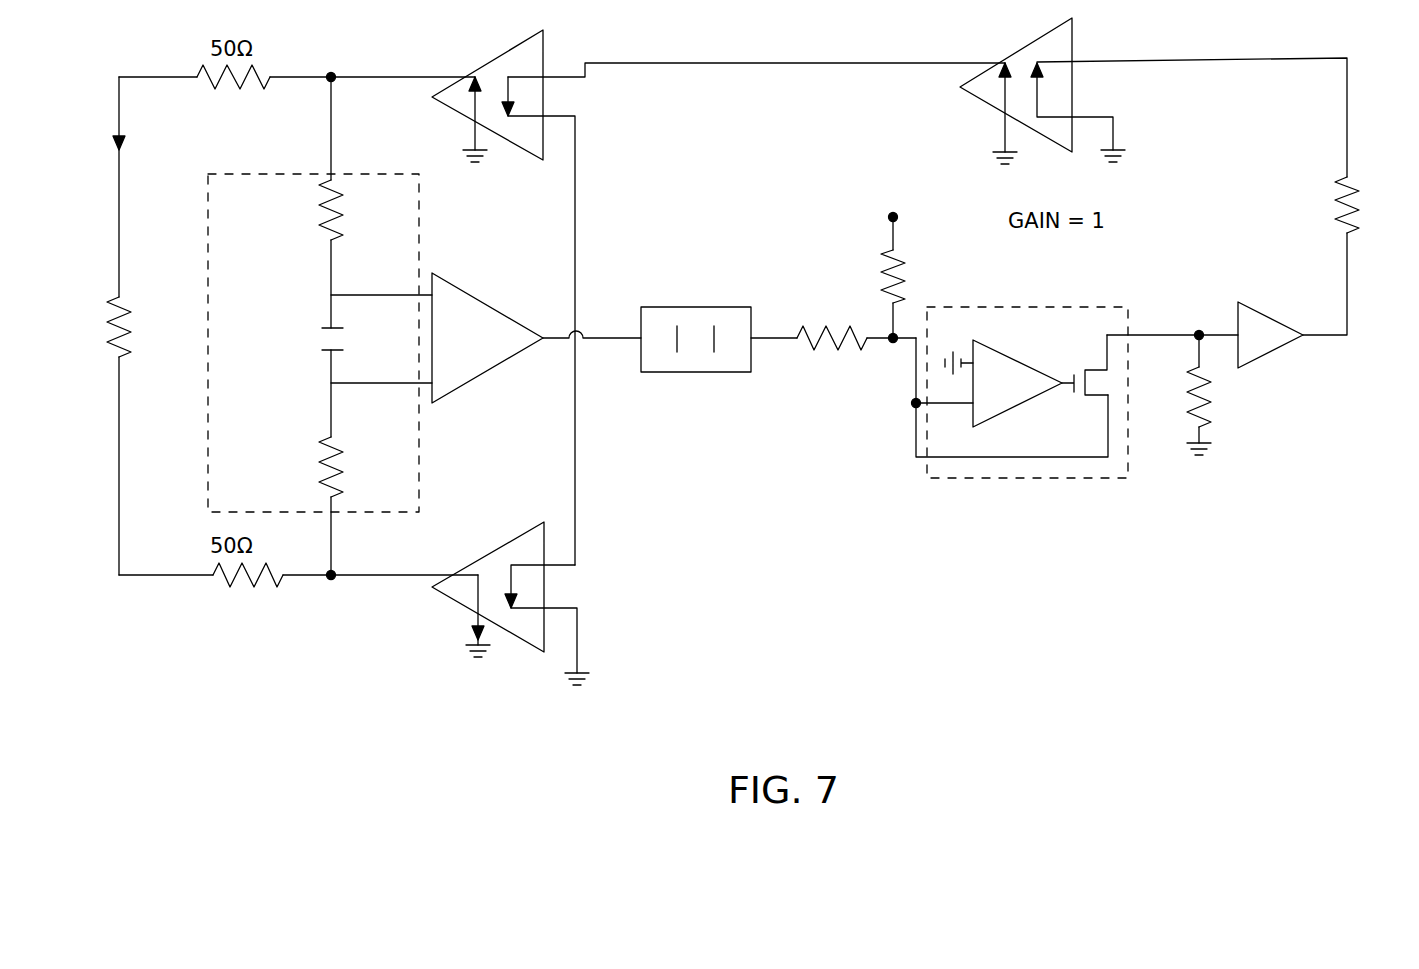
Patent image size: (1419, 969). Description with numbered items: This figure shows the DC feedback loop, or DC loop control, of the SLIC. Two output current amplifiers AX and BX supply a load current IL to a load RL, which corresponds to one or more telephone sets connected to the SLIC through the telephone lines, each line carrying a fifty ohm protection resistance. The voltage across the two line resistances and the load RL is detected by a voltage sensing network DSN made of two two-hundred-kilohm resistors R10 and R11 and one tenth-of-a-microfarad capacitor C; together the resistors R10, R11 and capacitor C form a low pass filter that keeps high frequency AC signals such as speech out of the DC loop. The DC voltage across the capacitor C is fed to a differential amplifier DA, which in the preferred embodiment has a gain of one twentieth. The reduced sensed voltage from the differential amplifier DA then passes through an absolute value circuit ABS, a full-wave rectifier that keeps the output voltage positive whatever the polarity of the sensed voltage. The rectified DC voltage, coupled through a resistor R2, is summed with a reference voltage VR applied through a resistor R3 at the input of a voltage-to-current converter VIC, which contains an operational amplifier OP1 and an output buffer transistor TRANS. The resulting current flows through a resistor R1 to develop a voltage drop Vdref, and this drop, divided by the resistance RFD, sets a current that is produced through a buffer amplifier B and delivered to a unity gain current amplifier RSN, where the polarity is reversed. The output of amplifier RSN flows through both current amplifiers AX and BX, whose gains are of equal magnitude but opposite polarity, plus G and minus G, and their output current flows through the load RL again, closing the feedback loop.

The load current IL is at (135, 148).
The load RL is at (138, 327).
The voltage sensing network DSN is at (207, 218).
The resistor R10 is at (338, 219).
The capacitor C is at (306, 358).
The resistor R11 is at (338, 472).
The differential amplifier DA is at (483, 380).
The output current amplifier AX is at (718, 297).
The output current amplifier BX is at (564, 603).
The absolute value circuit ABS is at (693, 372).
The resistor R2 is at (856, 323).
The resistor R3 is at (913, 277).
The reference voltage VR is at (897, 217).
The voltage-to-current converter VIC is at (1055, 379).
The operational amplifier OP1 is at (997, 353).
The output buffer transistor TRANS is at (1093, 400).
The resistor R1 is at (1215, 395).
The voltage drop Vdref is at (1158, 398).
The buffer amplifier B is at (1292, 300).
The resistance RFD is at (1224, 145).
The unity gain current amplifier RSN is at (1042, 91).